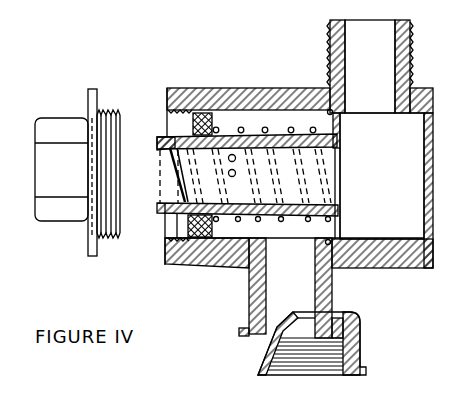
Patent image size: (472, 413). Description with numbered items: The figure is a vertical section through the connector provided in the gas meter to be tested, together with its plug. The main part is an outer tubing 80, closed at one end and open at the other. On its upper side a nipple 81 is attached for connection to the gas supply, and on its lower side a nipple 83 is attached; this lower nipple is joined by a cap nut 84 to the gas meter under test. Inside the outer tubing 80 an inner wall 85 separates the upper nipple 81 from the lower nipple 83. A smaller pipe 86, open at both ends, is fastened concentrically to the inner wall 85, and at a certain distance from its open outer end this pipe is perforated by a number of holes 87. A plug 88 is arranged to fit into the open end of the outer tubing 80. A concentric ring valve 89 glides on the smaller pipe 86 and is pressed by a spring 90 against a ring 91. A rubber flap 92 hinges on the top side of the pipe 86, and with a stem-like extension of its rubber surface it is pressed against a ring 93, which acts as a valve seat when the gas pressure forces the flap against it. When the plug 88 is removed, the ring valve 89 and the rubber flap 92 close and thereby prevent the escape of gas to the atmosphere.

The outer tubing 80 is at (244, 87).
The nipple 81 is at (411, 46).
The nipple 83 is at (332, 292).
The cap nut 84 is at (362, 343).
The inner wall 85 is at (340, 223).
The smaller pipe 86 is at (251, 134).
The holes 87 is at (236, 178).
The plug 88 is at (69, 226).
The concentric ring valve 89 is at (218, 229).
The spring 90 is at (293, 130).
The ring 91 is at (190, 116).
The flap 92 is at (178, 183).
The ring 93 is at (158, 144).